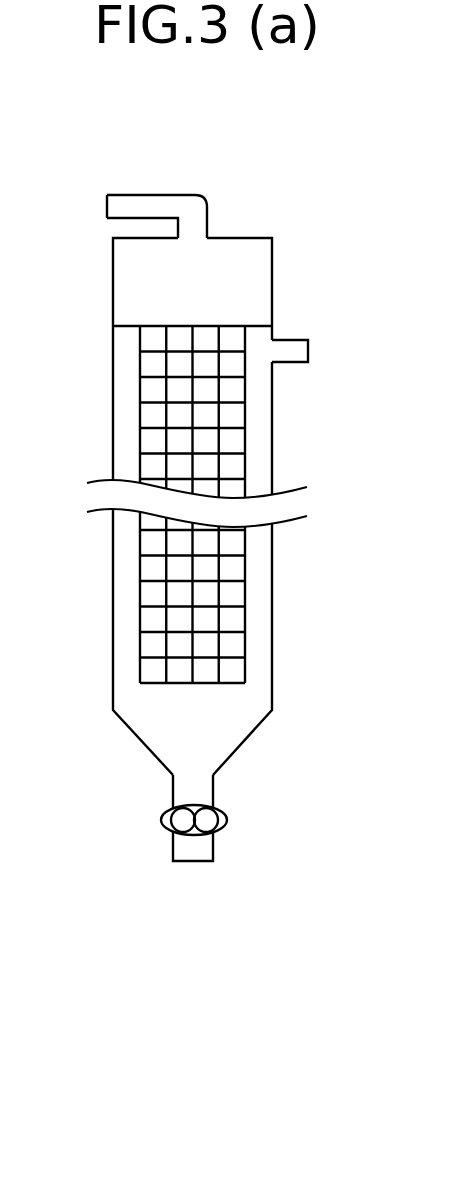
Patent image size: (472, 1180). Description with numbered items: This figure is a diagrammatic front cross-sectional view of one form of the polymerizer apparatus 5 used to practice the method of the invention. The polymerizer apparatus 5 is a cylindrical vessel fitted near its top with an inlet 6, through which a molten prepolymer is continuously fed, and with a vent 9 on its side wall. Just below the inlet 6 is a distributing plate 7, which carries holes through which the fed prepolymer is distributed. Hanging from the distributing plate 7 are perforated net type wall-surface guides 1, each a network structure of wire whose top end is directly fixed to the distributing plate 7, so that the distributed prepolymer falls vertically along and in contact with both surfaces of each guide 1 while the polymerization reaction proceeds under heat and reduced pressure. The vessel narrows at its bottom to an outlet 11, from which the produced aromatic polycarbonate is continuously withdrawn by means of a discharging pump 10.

The net type wall-surface guide 1 is at (245, 440).
The polymerizer apparatus 5 is at (113, 398).
The inlet 6 is at (127, 193).
The distributing plate 7 is at (127, 325).
The vent 9 is at (309, 350).
The discharging pump 10 is at (228, 818).
The outlet 11 is at (192, 862).